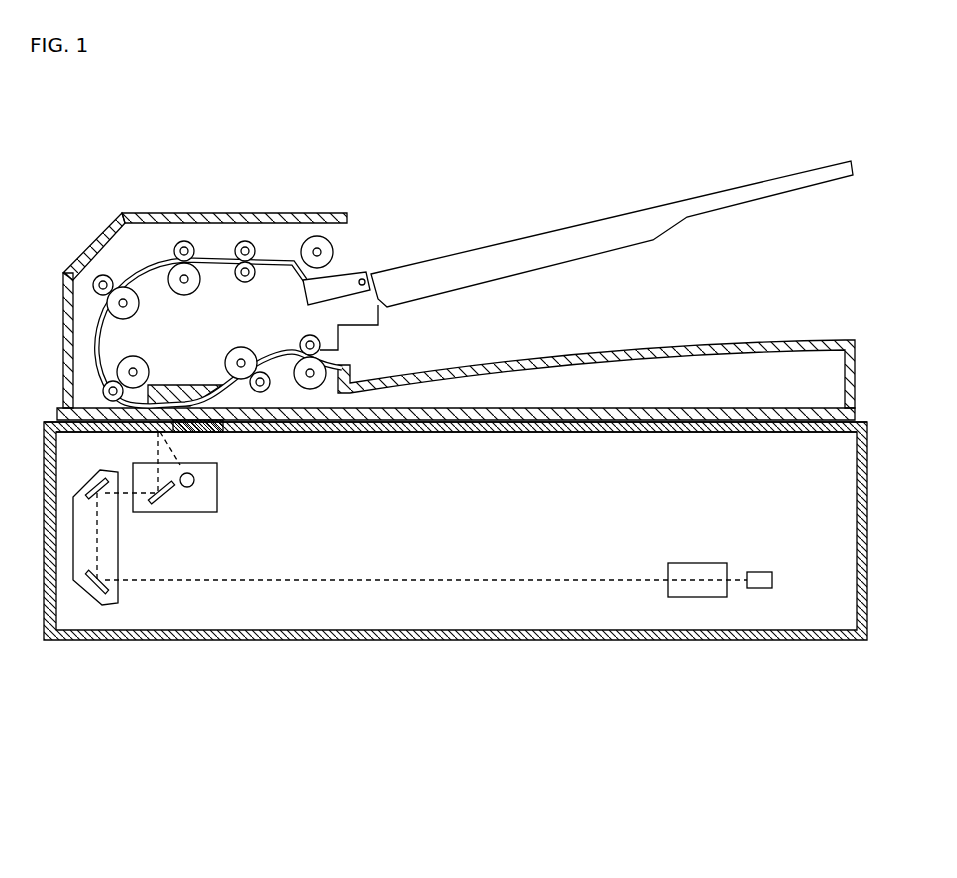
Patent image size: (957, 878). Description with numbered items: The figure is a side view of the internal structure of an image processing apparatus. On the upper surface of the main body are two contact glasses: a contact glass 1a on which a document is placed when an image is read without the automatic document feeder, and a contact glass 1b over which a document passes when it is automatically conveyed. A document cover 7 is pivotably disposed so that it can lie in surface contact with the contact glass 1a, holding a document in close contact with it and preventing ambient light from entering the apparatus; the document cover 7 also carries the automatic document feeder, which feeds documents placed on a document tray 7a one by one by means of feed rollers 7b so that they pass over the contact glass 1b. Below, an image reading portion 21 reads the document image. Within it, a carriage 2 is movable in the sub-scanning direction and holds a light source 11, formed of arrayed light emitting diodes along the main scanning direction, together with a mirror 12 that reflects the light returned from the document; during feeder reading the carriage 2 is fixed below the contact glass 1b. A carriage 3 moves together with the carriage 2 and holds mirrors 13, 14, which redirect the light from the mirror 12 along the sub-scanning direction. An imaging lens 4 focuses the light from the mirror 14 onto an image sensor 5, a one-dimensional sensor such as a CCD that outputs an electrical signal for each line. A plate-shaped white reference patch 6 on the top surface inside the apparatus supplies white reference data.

The contact glass 1a is at (535, 432).
The contact glass 1b is at (150, 432).
The carriage 2 is at (217, 505).
The carriage 3 is at (118, 572).
The imaging lens 4 is at (697, 562).
The image sensor 5 is at (758, 572).
The white reference patch 6 is at (197, 432).
The document cover 7 is at (797, 343).
The document tray 7a is at (478, 250).
The feed rollers 7b is at (197, 290).
The light source 11 is at (190, 488).
The mirror 12 is at (157, 505).
The mirror 13 is at (87, 490).
The mirror 14 is at (90, 582).
The image reading portion 21 is at (768, 620).